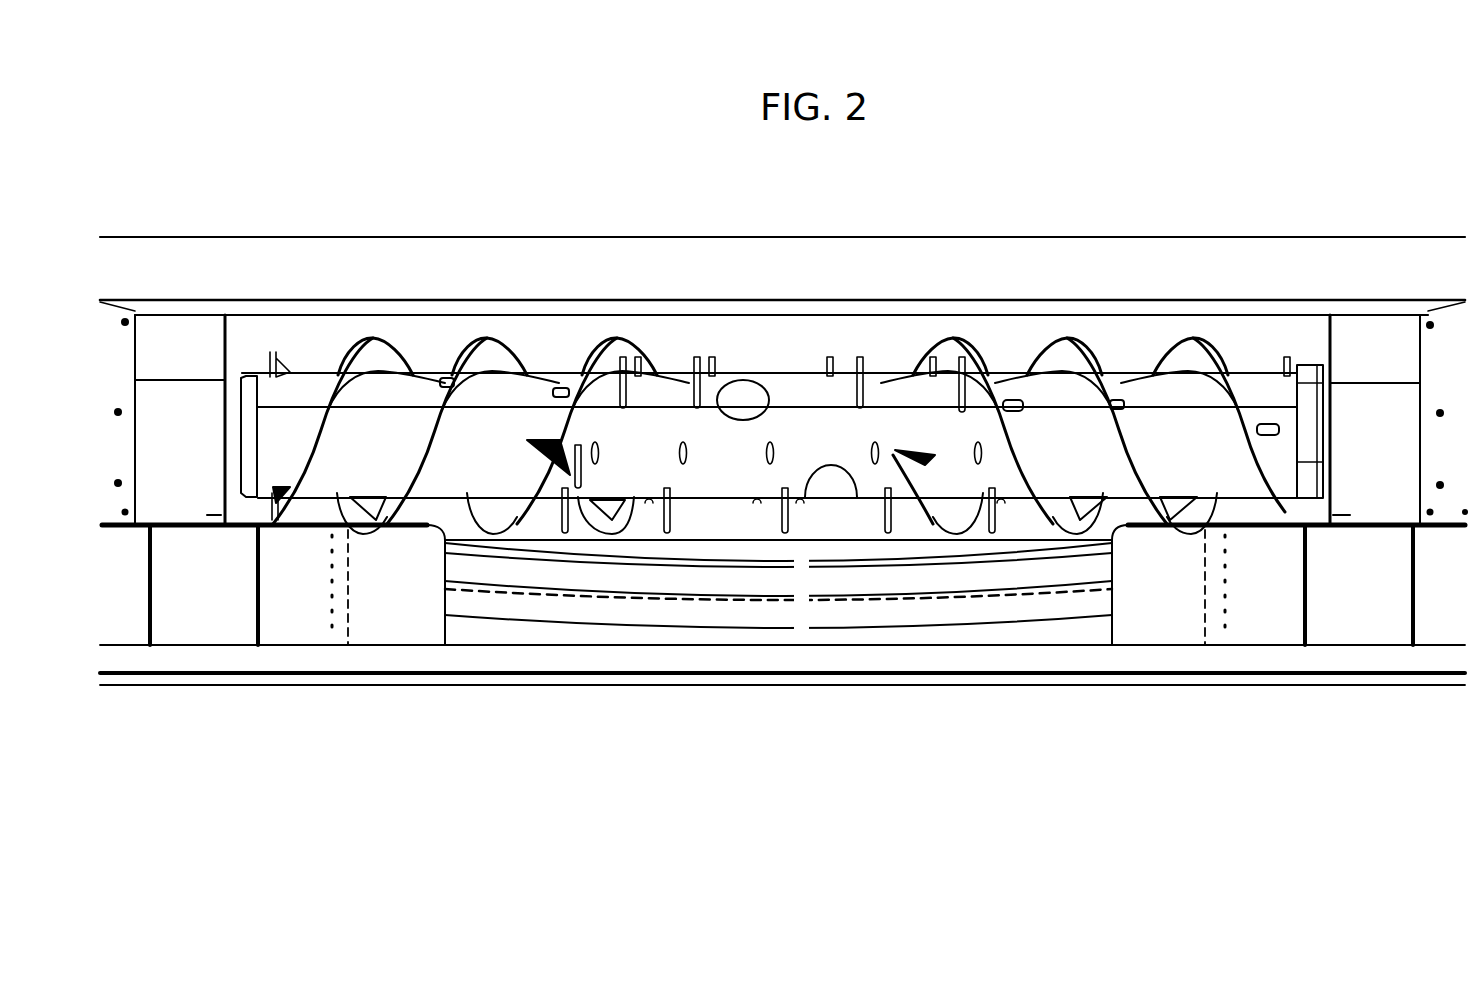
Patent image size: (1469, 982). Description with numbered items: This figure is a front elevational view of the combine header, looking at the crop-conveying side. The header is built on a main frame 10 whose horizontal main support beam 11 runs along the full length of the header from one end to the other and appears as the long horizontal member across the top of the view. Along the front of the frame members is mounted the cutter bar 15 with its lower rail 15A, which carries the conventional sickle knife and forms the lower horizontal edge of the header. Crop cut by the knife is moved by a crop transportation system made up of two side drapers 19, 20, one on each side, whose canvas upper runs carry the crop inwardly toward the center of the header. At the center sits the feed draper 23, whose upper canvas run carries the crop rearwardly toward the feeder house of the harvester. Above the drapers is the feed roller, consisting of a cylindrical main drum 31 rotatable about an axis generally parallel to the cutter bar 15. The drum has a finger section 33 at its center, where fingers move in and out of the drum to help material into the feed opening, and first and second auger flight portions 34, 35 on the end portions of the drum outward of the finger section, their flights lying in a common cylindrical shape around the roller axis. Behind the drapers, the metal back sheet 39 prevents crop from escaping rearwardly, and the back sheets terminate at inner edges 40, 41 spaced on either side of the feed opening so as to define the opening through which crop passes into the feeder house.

The main frame 10 is at (514, 207).
The horizontal main support beam 11 is at (878, 280).
The cutter bar 15 is at (381, 680).
The lower rail 15A is at (462, 681).
The side draper 19 is at (284, 628).
The side draper 20 is at (1252, 627).
The feed draper 23 is at (668, 605).
The main drum 31 is at (663, 390).
The finger section 33 is at (693, 360).
The first auger flight portion 34 is at (388, 335).
The second auger flight portion 35 is at (1068, 345).
The second back sheet 39 is at (1387, 500).
The inner edge of first back sheet 40 is at (238, 352).
The inner edge of second back sheet 41 is at (1320, 340).